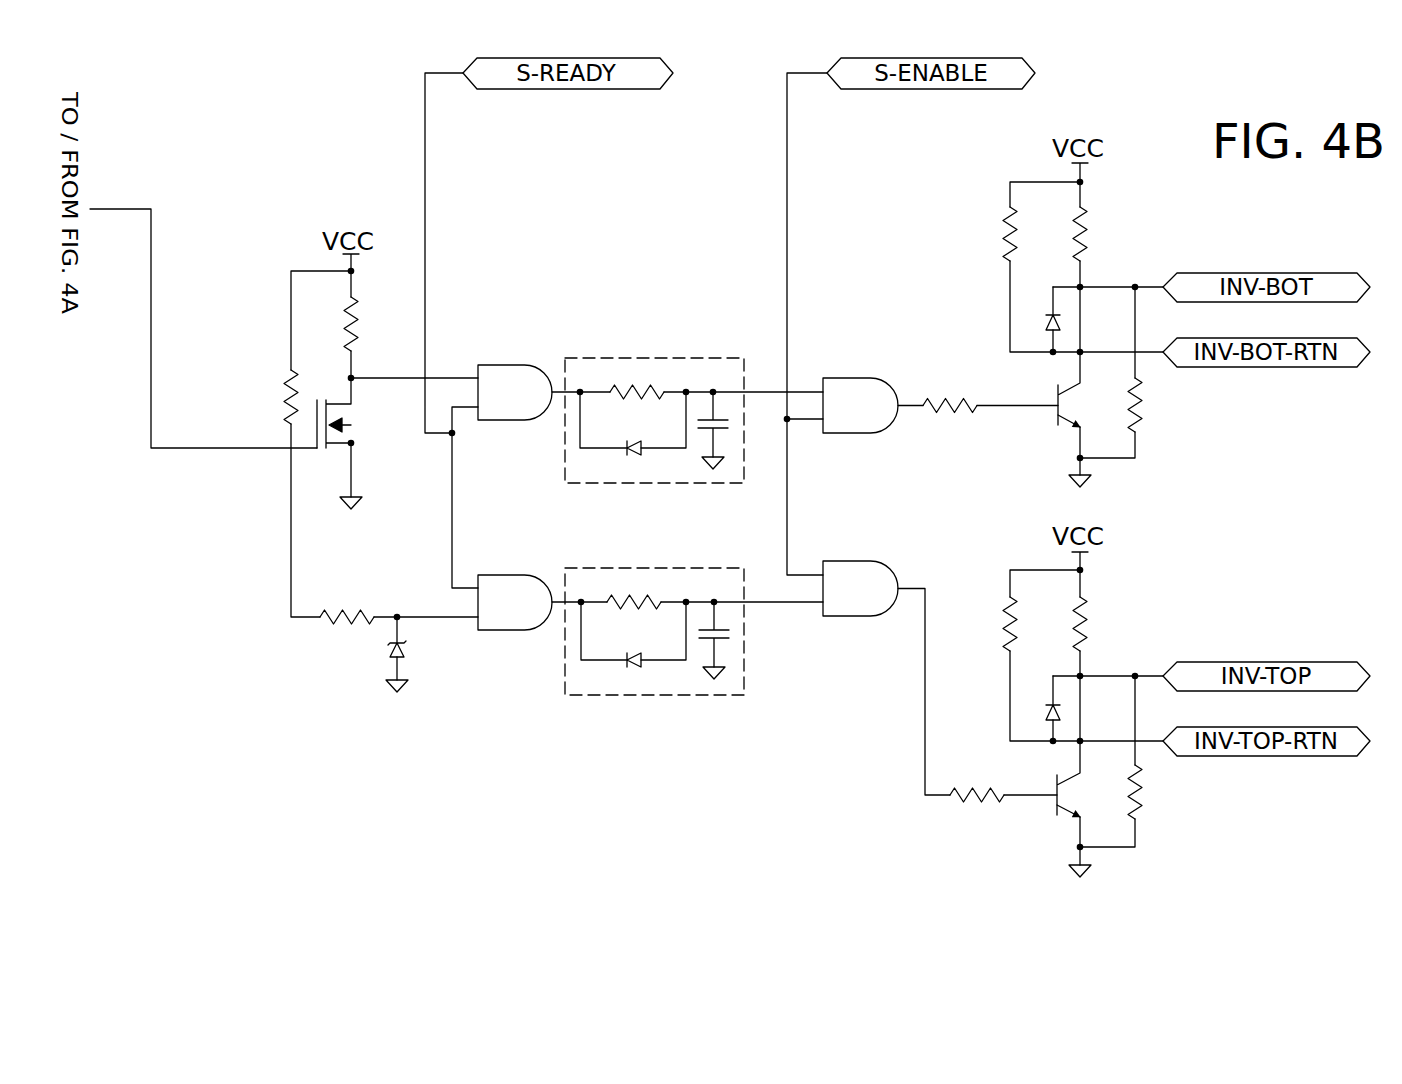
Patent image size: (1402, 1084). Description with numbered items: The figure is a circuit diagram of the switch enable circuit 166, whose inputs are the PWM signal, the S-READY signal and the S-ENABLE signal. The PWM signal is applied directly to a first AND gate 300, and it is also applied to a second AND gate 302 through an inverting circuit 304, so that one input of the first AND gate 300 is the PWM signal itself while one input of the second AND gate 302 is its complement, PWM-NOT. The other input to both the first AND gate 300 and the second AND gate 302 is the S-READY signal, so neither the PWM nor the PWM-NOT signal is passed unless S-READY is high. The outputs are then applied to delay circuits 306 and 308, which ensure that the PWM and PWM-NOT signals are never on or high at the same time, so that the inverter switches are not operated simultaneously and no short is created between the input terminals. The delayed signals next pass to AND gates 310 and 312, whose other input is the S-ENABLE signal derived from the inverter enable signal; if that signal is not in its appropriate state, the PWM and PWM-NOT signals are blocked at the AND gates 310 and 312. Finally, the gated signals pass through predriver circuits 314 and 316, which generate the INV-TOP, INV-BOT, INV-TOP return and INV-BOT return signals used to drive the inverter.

The switch enable circuit 166 is at (665, 538).
The first AND gate 300 is at (512, 578).
The second AND gate 302 is at (508, 372).
The inverting circuit 304 is at (367, 439).
The delay circuit 306 is at (665, 578).
The delay circuit 308 is at (637, 365).
The AND gate 310 is at (855, 570).
The AND gate 312 is at (843, 388).
The predriver circuit 314 is at (1156, 839).
The predriver circuit 316 is at (1158, 413).